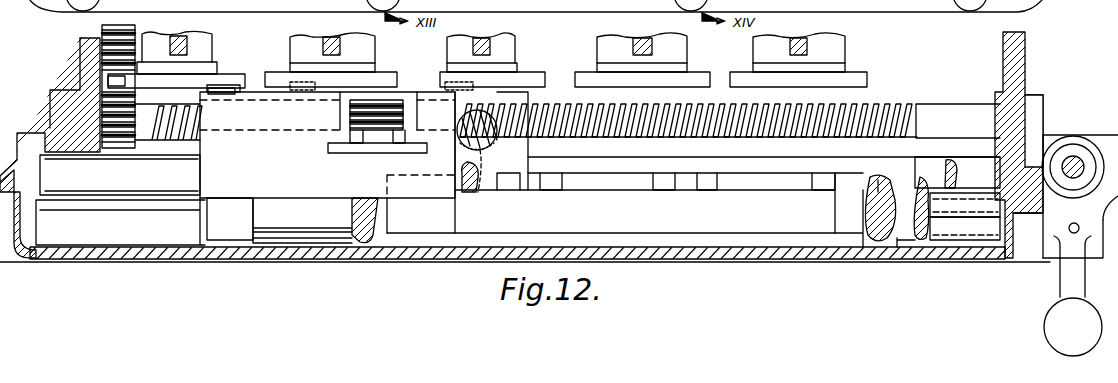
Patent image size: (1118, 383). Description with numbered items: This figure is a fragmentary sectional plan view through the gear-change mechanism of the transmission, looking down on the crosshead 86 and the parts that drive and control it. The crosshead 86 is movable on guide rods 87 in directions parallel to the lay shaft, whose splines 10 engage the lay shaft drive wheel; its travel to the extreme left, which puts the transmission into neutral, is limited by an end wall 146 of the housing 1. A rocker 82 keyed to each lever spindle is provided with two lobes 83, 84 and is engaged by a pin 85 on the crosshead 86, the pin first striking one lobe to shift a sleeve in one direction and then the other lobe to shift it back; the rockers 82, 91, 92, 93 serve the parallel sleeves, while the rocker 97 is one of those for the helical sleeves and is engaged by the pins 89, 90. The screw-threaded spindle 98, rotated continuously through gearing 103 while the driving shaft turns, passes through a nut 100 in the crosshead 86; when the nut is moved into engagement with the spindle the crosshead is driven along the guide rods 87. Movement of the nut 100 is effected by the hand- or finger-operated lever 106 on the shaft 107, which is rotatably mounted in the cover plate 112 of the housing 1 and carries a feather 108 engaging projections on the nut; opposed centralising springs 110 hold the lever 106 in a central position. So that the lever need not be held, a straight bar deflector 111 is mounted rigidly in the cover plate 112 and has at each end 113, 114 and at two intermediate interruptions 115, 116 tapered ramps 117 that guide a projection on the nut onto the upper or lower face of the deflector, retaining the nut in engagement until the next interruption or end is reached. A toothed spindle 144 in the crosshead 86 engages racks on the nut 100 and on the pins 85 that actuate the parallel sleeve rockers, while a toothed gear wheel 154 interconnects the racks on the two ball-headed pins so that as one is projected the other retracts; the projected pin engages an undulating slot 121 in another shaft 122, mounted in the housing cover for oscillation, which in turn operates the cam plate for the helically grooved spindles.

The housing 1 is at (1015, 70).
The splines 10 is at (78, 104).
The rocker 82 is at (193, 80).
The lobe 83 is at (110, 80).
The lobe 84 is at (240, 84).
The pin 85 is at (222, 94).
The crosshead 86 is at (305, 188).
The guide rods 87 is at (972, 168).
The pin 89 is at (303, 90).
The pin 90 is at (450, 90).
The rocker 91 is at (280, 78).
The rocker 92 is at (505, 80).
The rocker 93 is at (690, 82).
The rocker 97 is at (855, 80).
The screw-threaded spindle 98 is at (895, 110).
The nut 100 is at (378, 146).
The gearing 103 is at (100, 50).
The lever 106 is at (1070, 284).
The shaft 107 is at (965, 228).
The feather 108 is at (965, 205).
The centralising springs 110 is at (1082, 144).
The deflector 111 is at (693, 195).
The cover plate 112 is at (706, 258).
The left-hand end 113 is at (390, 215).
The right-hand end 114 is at (838, 213).
The interruption 115 is at (545, 193).
The interruption 116 is at (705, 193).
The tapered ramps 117 is at (648, 182).
The undulating slot 121 is at (880, 180).
The shaft 122 is at (335, 232).
The toothed spindle 144 is at (405, 106).
The end wall 146 is at (38, 230).
The toothed gear wheel 154 is at (472, 190).